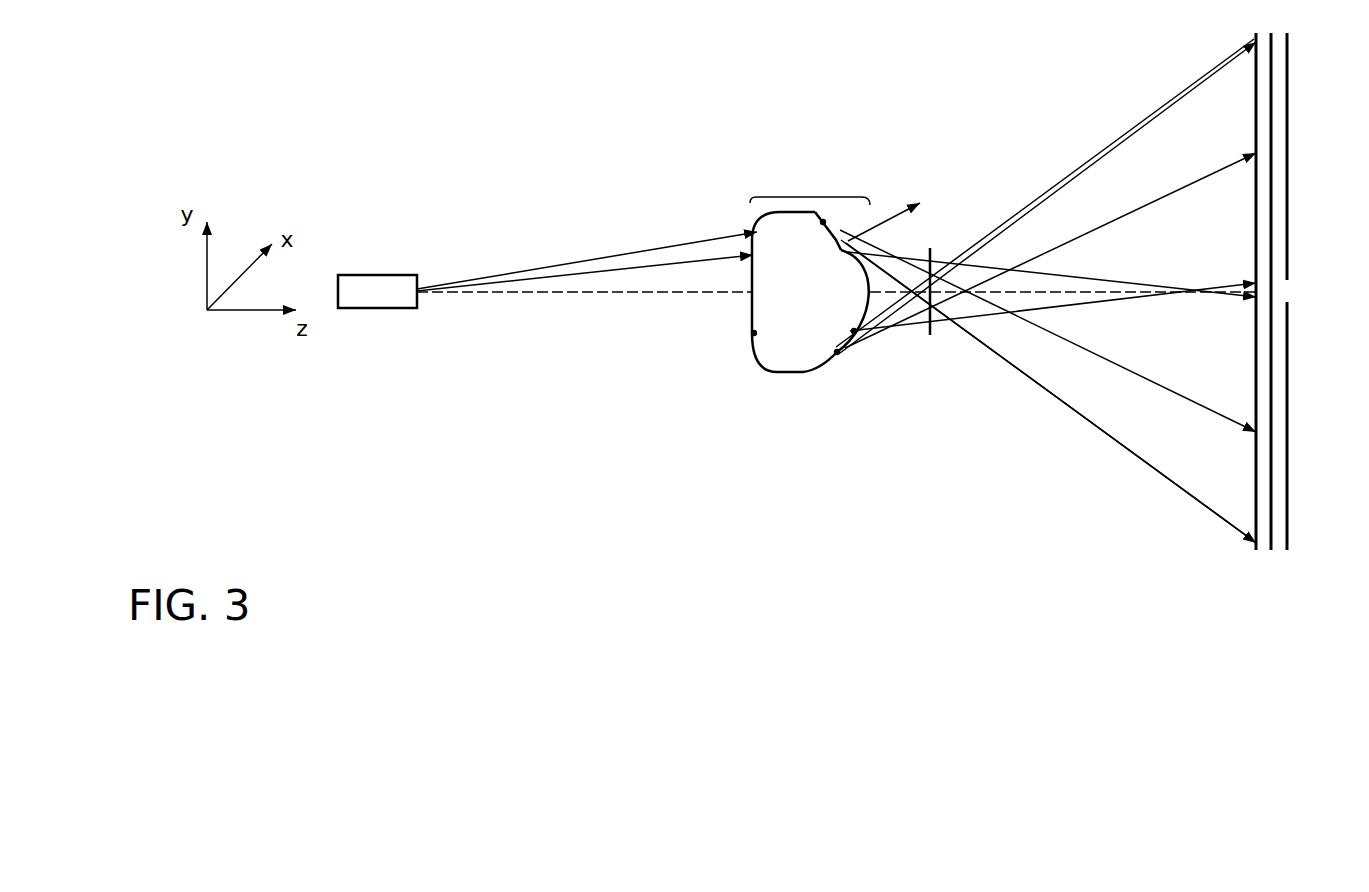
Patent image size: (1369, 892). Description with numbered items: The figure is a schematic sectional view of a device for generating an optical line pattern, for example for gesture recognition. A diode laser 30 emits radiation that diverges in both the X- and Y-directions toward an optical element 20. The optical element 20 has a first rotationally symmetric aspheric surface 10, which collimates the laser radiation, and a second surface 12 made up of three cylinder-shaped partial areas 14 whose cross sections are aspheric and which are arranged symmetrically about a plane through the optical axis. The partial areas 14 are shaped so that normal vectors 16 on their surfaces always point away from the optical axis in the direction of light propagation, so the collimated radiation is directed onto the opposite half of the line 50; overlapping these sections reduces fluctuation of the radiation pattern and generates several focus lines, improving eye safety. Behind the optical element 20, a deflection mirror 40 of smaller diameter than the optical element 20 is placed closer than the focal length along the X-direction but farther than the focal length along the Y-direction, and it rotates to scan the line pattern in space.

The first rotationally symmetric aspheric surface 10 is at (768, 193).
The second surface 12 is at (822, 193).
The cylinder-shaped partial areas 14 is at (823, 222).
The normal vectors 16 is at (886, 206).
The optical element 20 is at (788, 398).
The diode laser 30 is at (382, 308).
The deflection mirror 40 is at (930, 330).
The line 50 is at (1256, 353).